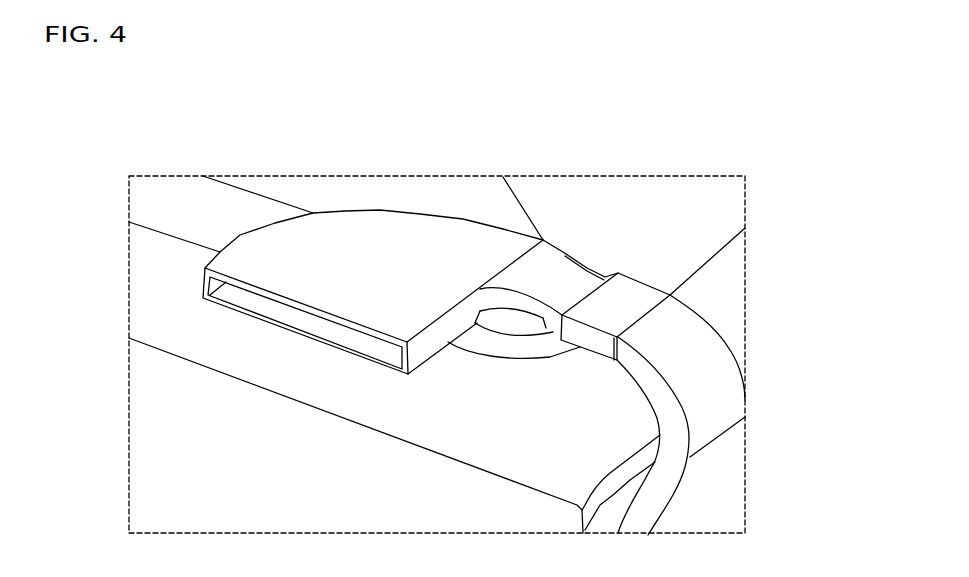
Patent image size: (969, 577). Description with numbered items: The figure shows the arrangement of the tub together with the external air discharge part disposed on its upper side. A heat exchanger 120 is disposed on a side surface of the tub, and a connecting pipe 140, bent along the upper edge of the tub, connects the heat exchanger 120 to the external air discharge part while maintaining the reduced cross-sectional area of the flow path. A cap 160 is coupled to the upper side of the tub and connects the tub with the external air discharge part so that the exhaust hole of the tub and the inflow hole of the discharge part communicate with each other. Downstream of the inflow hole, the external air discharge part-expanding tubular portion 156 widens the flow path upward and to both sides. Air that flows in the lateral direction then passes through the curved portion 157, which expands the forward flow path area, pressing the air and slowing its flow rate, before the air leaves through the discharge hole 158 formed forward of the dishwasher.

The heat exchanger 120 is at (712, 494).
The connecting pipe 140 is at (712, 395).
The external air discharge part-expanding tubular portion 156 is at (545, 258).
The curved portion 157 is at (457, 218).
The discharge hole 158 is at (335, 324).
The cap 160 is at (522, 332).